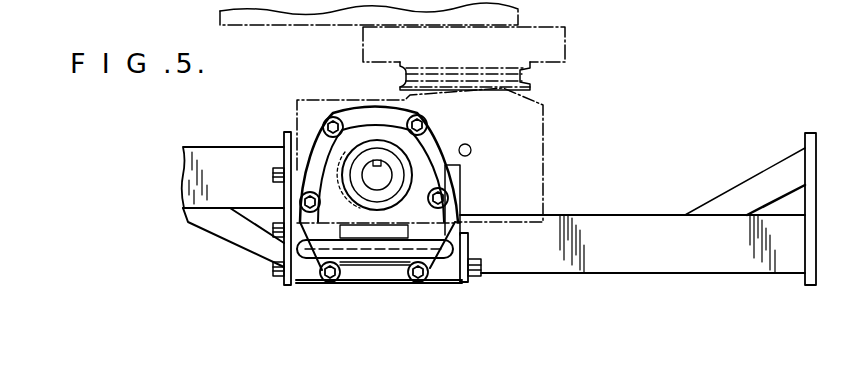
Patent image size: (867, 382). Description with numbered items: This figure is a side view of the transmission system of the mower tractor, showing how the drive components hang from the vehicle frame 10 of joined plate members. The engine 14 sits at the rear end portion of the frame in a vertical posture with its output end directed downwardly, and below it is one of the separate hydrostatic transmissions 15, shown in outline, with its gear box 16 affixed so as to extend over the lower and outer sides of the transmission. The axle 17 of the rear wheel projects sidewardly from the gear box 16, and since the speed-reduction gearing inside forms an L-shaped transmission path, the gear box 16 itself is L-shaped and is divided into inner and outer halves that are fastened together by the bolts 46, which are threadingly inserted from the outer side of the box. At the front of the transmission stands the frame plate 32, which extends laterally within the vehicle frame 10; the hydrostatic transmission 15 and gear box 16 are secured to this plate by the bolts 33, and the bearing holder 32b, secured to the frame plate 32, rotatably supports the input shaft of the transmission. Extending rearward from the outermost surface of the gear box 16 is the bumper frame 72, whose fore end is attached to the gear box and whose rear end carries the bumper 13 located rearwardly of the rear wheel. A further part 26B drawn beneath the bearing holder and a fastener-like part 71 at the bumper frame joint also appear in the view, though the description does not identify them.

The vehicle frame 10 is at (218, 158).
The bumper 13 is at (810, 132).
The engine 14 is at (340, 12).
The hydrostatic transmission 15 is at (523, 148).
The gear box 16 is at (272, 255).
The axle 17 is at (390, 172).
The pulley 26B is at (530, 81).
The frame plate 32 is at (284, 135).
The bearing holder 32b is at (550, 53).
The bolts 33 is at (272, 226).
The bolts 46 is at (410, 122).
The nut 71 is at (482, 264).
The bumper frames 72 is at (617, 223).